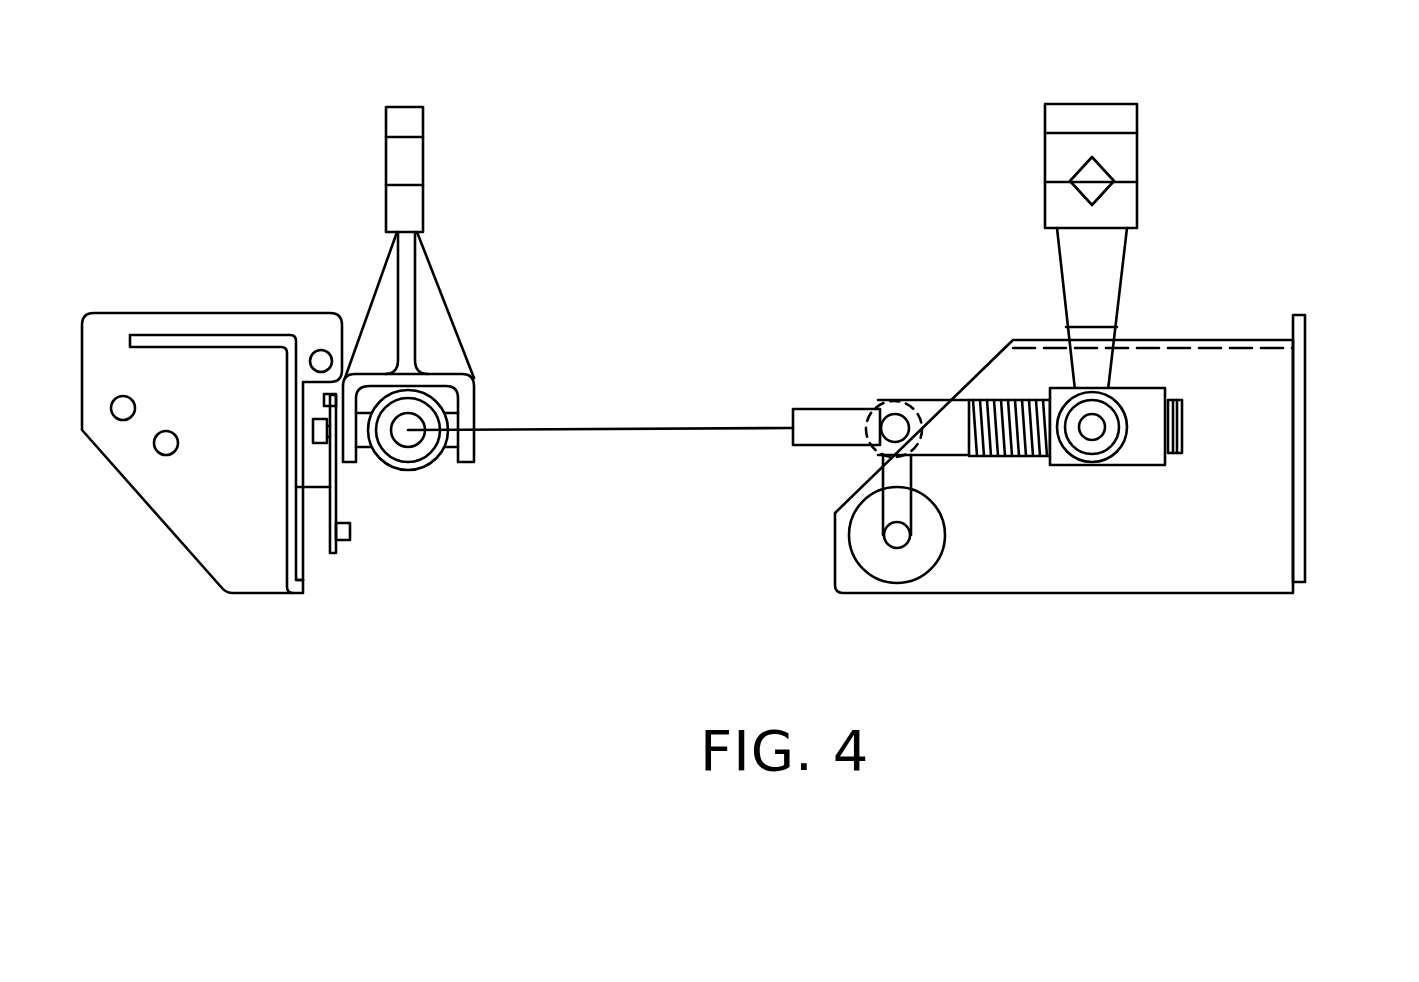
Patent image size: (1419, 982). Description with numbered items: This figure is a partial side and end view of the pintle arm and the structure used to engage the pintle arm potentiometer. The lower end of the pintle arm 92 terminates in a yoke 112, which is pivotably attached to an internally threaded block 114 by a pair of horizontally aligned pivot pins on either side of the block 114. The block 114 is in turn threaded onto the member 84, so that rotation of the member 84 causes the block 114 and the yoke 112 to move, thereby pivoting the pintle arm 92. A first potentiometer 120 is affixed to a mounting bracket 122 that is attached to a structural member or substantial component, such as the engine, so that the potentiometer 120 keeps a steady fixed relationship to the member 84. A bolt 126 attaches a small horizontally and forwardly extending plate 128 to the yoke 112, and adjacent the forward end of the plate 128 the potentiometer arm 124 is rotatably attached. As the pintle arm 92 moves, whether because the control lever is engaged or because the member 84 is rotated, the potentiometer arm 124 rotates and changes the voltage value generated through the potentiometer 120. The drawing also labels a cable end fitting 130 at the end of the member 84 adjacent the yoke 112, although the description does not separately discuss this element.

The member 84 is at (427, 461).
The pintle arm 92 is at (1110, 248).
The yoke 112 is at (471, 388).
The internally threaded block 114 is at (1143, 445).
The first potentiometer 120 is at (313, 563).
The mounting bracket 122 is at (256, 563).
The potentiometer arm 124 is at (340, 497).
The bolt 126 is at (313, 428).
The plate 128 is at (326, 397).
The cable end fitting 130 is at (893, 414).